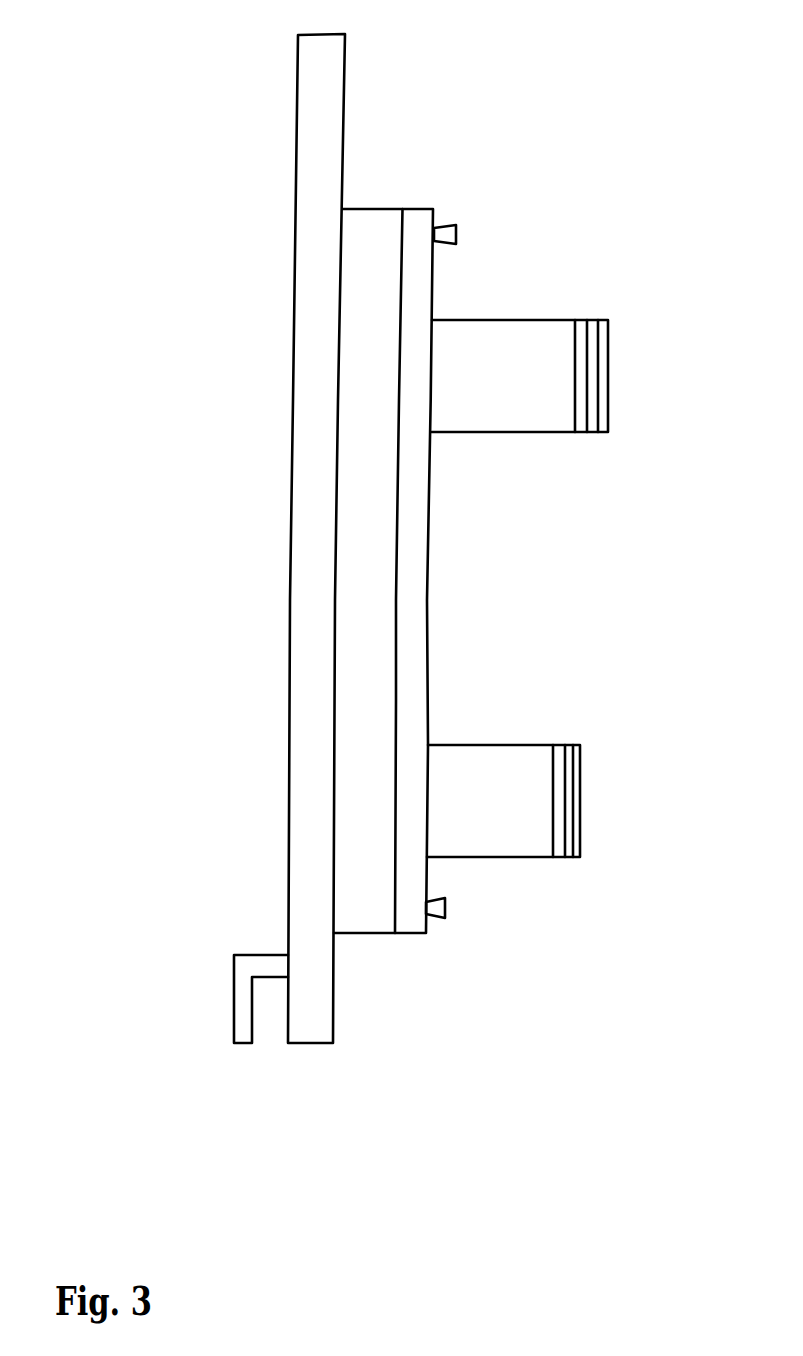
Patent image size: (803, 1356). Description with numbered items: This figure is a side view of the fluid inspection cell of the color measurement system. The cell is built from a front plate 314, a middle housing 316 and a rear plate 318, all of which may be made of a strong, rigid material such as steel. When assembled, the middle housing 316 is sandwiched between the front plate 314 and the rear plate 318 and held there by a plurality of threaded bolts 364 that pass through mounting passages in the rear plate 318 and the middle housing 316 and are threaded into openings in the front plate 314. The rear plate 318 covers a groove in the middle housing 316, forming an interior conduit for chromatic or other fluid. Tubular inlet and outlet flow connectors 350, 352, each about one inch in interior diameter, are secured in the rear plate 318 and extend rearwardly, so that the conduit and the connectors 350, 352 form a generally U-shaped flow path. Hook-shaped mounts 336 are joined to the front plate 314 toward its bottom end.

The front plate 314 is at (317, 147).
The middle housing 316 is at (362, 250).
The rear plate 318 is at (410, 630).
The inlet flow connector 350 is at (493, 350).
The outlet flow connector 352 is at (465, 785).
The threaded bolt 364 is at (457, 232).
The hook-shaped mount 336 is at (240, 1003).